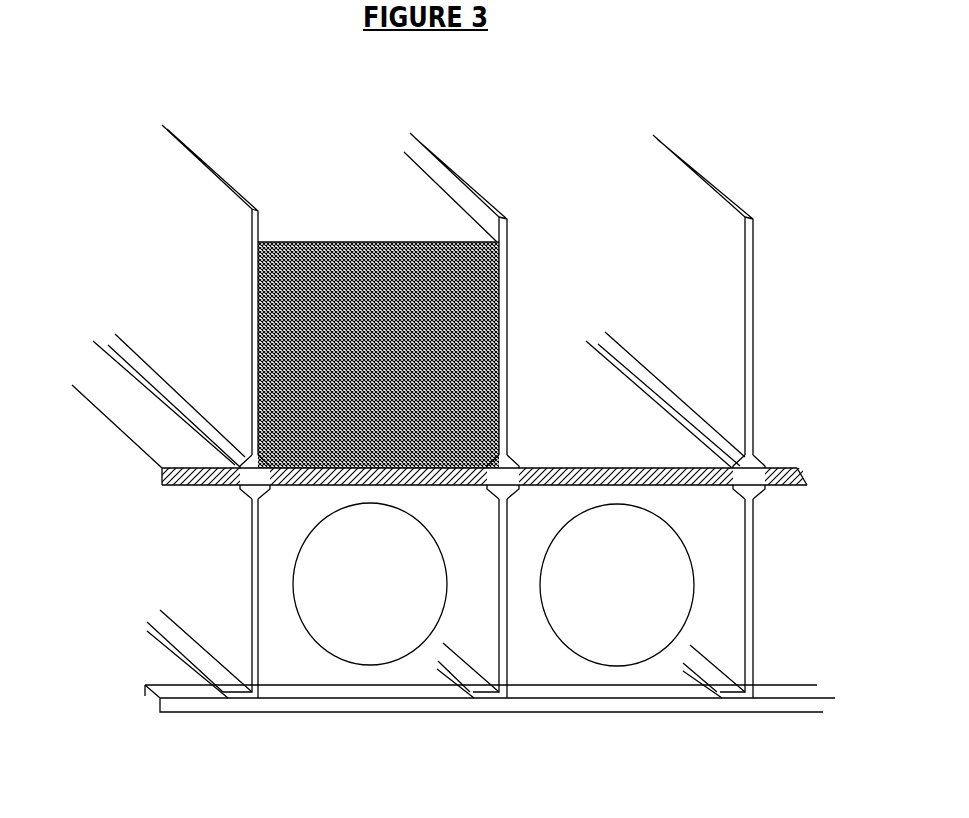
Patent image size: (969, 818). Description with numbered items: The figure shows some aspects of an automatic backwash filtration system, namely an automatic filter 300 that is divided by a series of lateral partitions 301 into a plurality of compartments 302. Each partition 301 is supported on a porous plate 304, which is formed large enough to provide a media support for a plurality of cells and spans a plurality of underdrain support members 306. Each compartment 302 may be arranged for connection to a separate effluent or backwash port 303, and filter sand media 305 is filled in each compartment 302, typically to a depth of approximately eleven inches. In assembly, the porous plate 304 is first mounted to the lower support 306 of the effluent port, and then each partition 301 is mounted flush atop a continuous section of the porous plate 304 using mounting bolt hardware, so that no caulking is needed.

The automatic filter 300 is at (127, 221).
The lateral partition 301 is at (757, 237).
The compartment 302 is at (616, 266).
The effluent or backwash port 303 is at (327, 590).
The porous plate 304 is at (605, 470).
The filter sand media 305 is at (388, 323).
The underdrain support member 306 is at (500, 662).